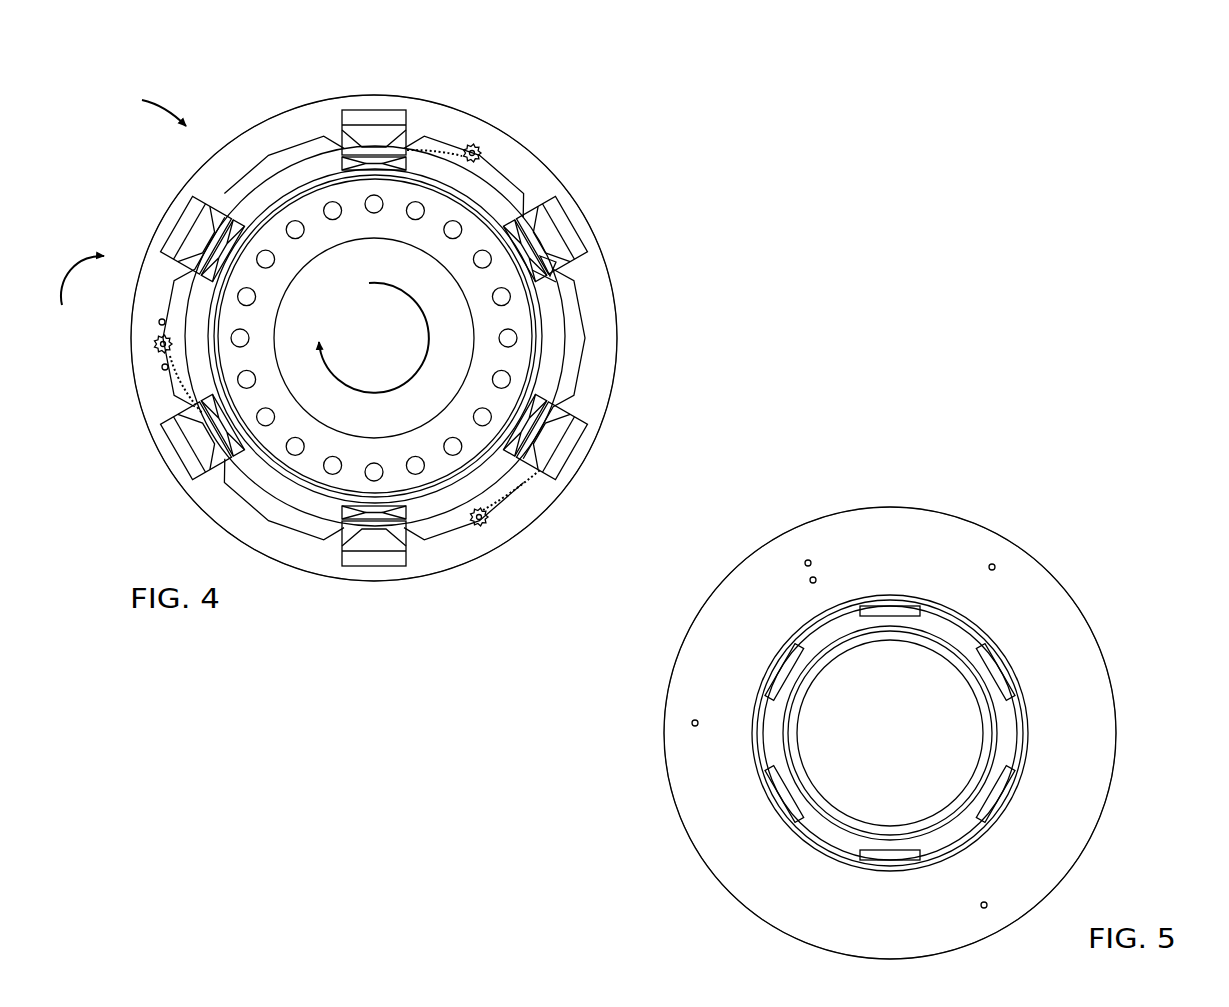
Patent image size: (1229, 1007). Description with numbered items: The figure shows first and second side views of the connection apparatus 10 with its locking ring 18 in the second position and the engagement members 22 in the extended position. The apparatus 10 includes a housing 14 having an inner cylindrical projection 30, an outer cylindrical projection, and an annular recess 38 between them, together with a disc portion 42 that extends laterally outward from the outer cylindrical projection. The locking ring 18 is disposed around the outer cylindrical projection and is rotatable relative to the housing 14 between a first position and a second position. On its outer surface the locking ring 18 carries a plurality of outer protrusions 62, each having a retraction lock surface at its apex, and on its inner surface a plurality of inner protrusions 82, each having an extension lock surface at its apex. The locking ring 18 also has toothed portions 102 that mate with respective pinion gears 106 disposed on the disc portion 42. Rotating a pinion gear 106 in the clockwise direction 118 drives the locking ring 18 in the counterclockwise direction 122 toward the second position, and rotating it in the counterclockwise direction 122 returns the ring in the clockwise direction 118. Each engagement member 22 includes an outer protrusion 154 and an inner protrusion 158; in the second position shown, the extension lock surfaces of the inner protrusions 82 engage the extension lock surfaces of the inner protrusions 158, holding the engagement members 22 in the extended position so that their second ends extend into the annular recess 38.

In FIG. 4, the connection apparatus 10 is at (148, 100).
In FIG. 4, the housing 14 is at (538, 160).
In FIG. 5, the housing 14 is at (1060, 577).
In FIG. 4, the locking ring 18 is at (566, 330).
In FIG. 4, the engagement member 22 is at (374, 124).
In FIG. 5, the engagement member 22 is at (890, 600).
In FIG. 5, the inner cylindrical projection 30 is at (800, 733).
In FIG. 5, the annular recess 38 is at (816, 640).
In FIG. 4, the disc portion 42 is at (609, 401).
In FIG. 5, the disc portion 42 is at (1075, 860).
In FIG. 4, the outer protrusion 62 is at (292, 143).
In FIG. 4, the inner protrusion 82 is at (403, 160).
In FIG. 4, the toothed portion 102 is at (178, 384).
In FIG. 4, the pinion gear 106 is at (152, 345).
In FIG. 4, the clockwise direction 118 is at (357, 388).
In FIG. 4, the counterclockwise direction 122 is at (70, 305).
In FIG. 4, the outer protrusion 154 is at (562, 268).
In FIG. 4, the inner protrusion 158 is at (548, 274).